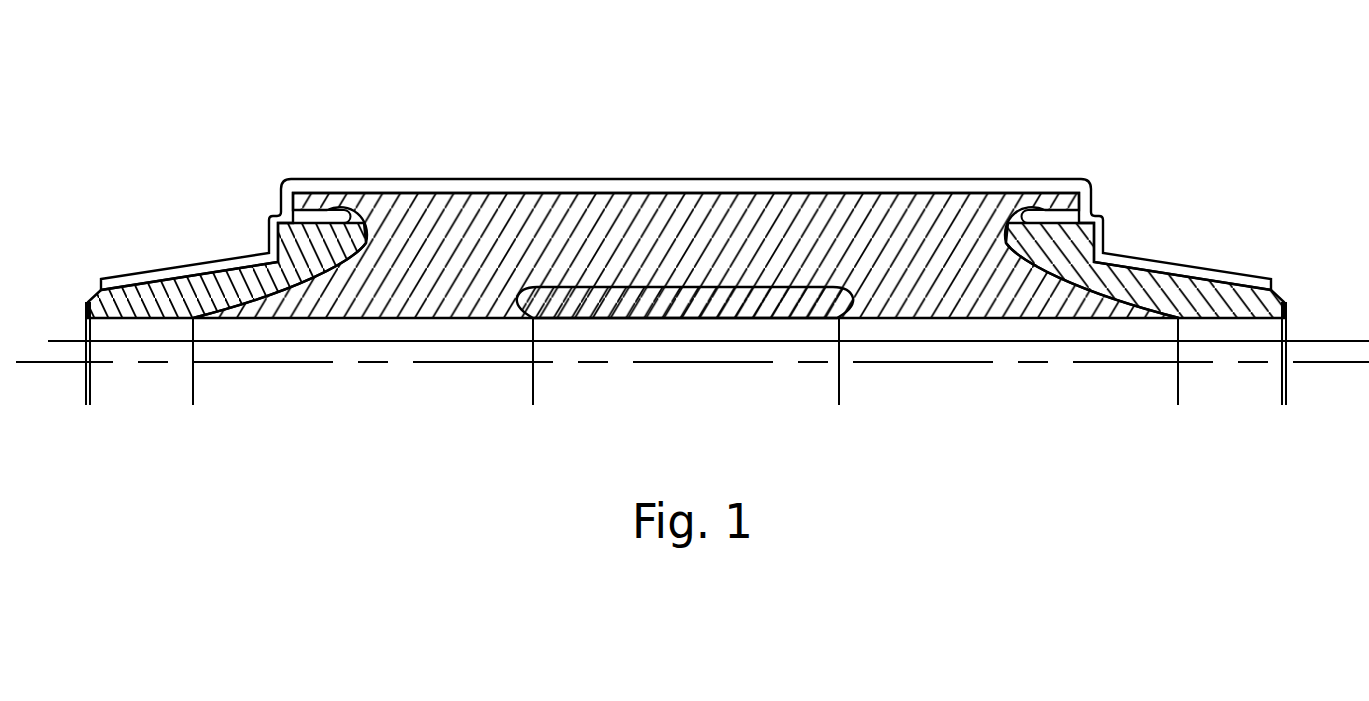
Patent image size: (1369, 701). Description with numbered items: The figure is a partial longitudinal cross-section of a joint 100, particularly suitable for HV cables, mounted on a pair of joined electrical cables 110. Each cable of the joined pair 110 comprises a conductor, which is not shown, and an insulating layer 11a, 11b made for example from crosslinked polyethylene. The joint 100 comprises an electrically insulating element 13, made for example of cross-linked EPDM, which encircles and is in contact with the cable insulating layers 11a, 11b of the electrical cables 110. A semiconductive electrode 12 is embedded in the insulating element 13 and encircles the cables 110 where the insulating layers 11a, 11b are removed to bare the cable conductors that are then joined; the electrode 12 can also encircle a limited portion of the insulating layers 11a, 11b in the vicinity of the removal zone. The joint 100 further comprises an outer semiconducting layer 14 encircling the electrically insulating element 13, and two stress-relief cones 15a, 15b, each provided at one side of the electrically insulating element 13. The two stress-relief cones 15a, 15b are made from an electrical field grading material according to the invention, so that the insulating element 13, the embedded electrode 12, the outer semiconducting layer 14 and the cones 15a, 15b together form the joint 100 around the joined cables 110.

The joint 100 is at (692, 254).
The insulating layer 11a is at (308, 330).
The insulating layer 11b is at (995, 330).
The semiconductive electrode 12 is at (665, 310).
The insulating element 13 is at (523, 233).
The outer semiconducting layer 14 is at (845, 188).
The stress-relief cone 15a is at (202, 288).
The stress-relief cone 15b is at (1177, 290).
The joined electrical cables 110 is at (760, 375).